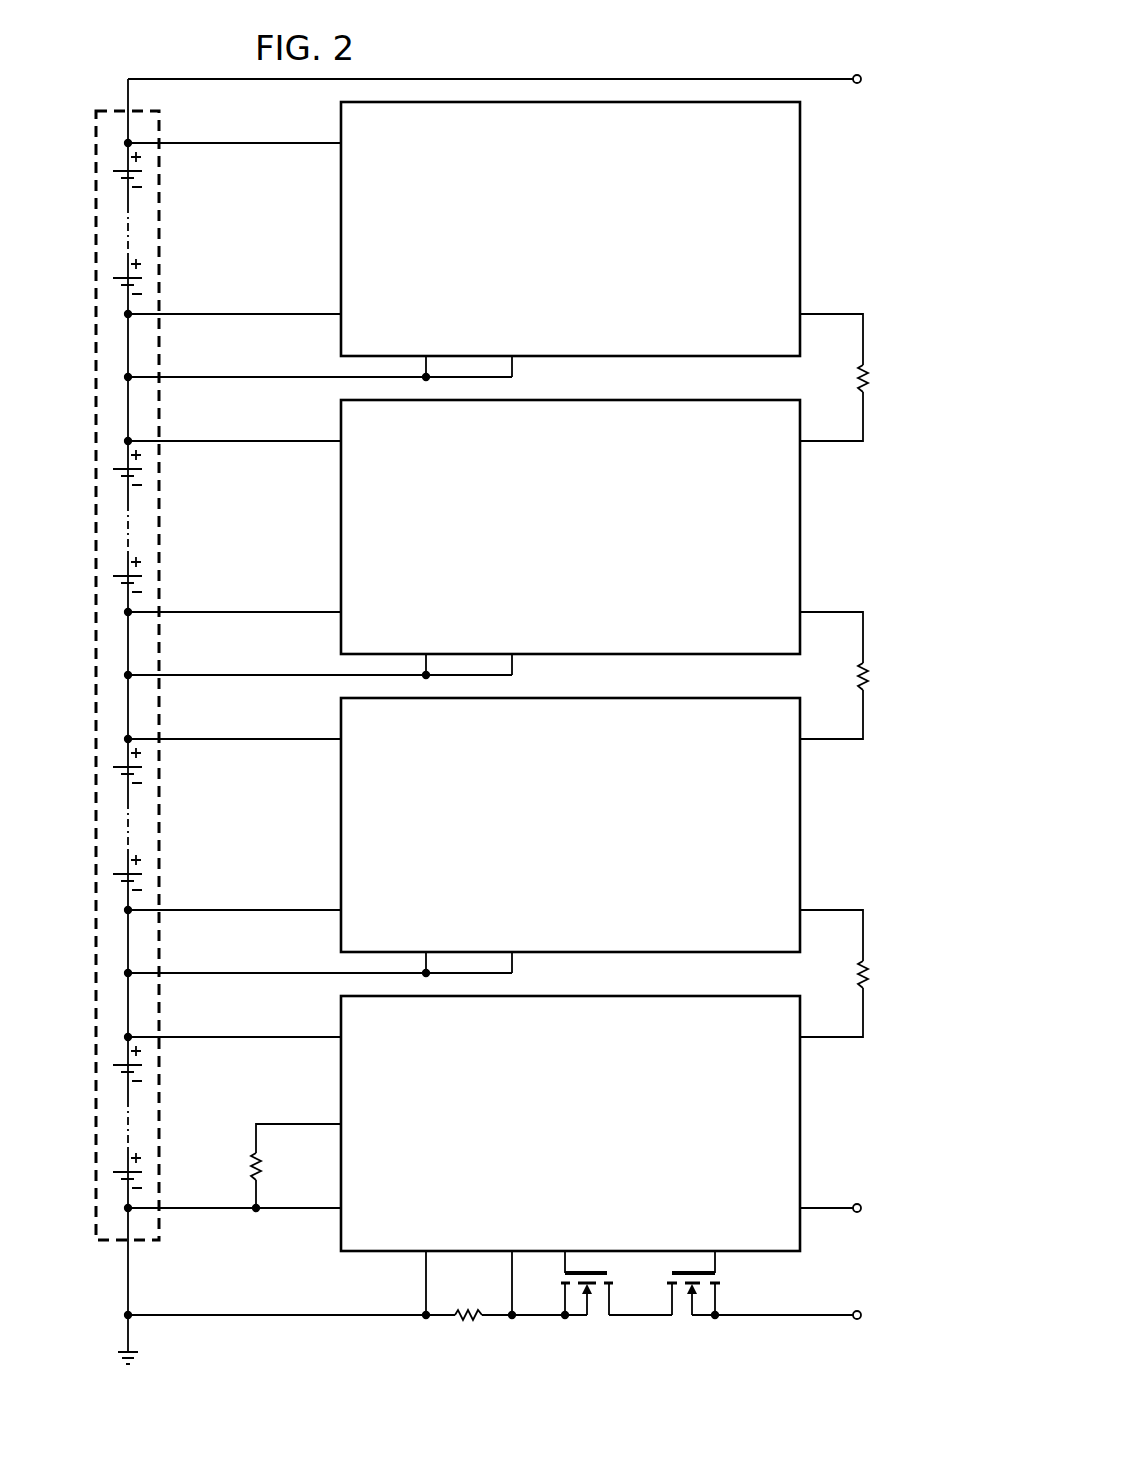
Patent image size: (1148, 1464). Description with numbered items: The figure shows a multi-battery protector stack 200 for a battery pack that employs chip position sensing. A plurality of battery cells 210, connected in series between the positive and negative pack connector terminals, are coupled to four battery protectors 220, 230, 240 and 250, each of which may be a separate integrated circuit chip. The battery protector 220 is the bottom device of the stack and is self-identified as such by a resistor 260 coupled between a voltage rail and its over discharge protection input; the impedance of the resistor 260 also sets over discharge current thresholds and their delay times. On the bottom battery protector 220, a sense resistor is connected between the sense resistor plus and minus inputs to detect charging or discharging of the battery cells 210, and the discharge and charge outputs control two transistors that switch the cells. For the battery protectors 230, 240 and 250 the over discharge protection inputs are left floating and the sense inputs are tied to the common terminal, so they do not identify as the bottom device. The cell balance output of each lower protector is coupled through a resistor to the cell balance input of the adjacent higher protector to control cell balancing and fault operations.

The multi-battery protector stack 200 is at (700, 52).
The battery cells 210 is at (105, 110).
The battery protector 220 is at (592, 1137).
The battery protector 230 is at (592, 839).
The battery protector 240 is at (592, 541).
The battery protector 250 is at (592, 243).
The resistor 260 is at (262, 1167).